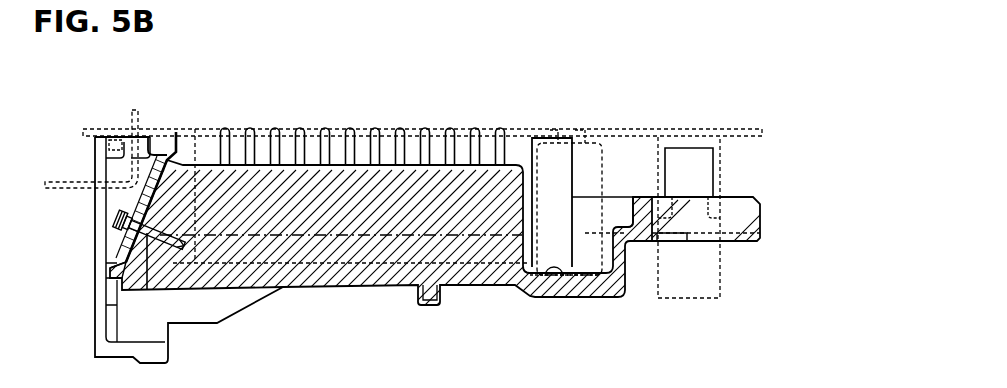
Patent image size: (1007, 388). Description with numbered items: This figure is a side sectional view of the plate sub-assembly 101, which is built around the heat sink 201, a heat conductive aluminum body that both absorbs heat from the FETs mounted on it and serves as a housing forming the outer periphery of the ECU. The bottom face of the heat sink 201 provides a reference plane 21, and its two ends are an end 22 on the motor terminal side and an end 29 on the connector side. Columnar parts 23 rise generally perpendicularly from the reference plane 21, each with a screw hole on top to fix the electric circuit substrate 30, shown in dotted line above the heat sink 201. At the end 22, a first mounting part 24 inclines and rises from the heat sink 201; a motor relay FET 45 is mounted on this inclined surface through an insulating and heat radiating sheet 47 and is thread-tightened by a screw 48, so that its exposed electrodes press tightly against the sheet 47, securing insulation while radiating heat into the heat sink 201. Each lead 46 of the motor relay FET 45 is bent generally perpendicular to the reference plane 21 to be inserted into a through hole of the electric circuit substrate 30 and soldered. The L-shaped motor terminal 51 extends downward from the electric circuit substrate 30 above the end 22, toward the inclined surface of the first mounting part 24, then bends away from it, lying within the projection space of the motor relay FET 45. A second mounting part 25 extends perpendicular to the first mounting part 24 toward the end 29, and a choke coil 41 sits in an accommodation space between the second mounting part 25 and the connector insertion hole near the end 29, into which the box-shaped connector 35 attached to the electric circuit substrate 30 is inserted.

The reference plane 21 is at (543, 278).
The end on the motor terminal side 22 is at (102, 270).
The columnar part 23 is at (120, 137).
The first mounting part 24 is at (163, 213).
The second mounting part 25 is at (362, 192).
The end on the connector side 29 is at (758, 210).
The electric circuit substrate 30 is at (713, 132).
The connector 35 is at (690, 298).
The choke coil 41 is at (577, 297).
The motor relay FET 45 is at (155, 180).
The lead 46 is at (174, 133).
The insulating and heat radiating sheet 47 is at (123, 250).
The screw 48 is at (117, 213).
The motor terminal 51 is at (61, 182).
The plate sub-assembly 101 is at (753, 260).
The heat sink 201 is at (347, 262).